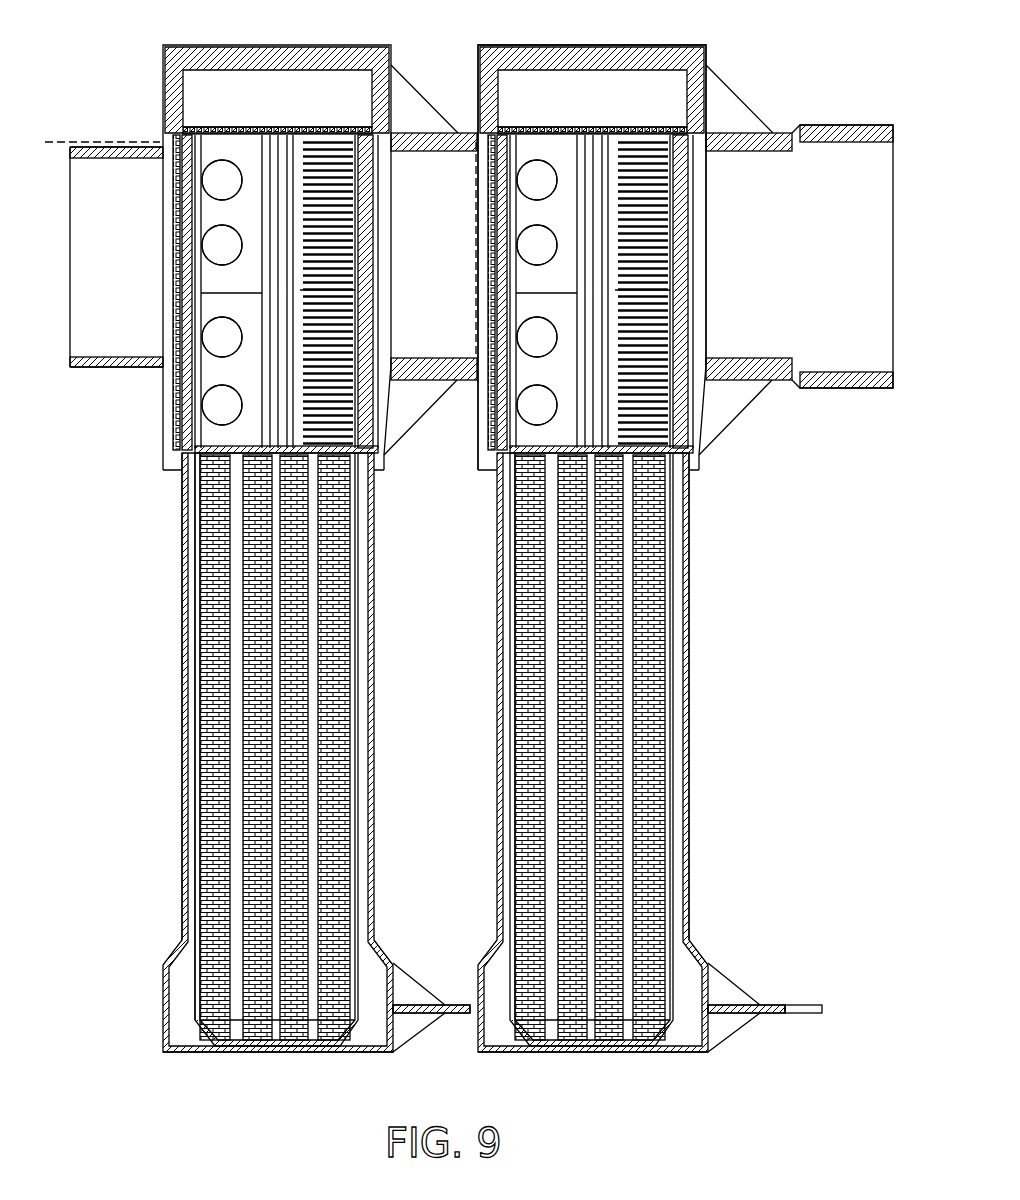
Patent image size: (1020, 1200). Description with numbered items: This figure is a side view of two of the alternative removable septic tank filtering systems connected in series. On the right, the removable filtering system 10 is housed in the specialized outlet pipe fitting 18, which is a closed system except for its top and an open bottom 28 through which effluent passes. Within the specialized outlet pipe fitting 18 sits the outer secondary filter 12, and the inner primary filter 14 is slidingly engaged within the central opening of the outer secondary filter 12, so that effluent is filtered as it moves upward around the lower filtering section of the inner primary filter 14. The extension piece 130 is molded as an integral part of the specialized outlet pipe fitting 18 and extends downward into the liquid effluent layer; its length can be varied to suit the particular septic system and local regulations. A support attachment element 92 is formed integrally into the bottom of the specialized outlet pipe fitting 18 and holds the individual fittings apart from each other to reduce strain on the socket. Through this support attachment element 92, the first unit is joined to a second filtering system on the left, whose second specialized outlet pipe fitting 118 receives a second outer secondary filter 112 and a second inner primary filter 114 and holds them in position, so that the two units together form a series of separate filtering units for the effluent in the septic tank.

The removable filtering system 10 is at (716, 740).
The outer secondary filter 12 is at (566, 375).
The inner primary filter 14 is at (692, 642).
The specialized outlet pipe fitting 18 is at (838, 133).
The open bottom 28 is at (368, 1040).
The support attachment element 92 is at (785, 1006).
The second outer secondary filter 112 is at (218, 372).
The second inner primary filter 114 is at (186, 558).
The second specialized outlet pipe fitting 118 is at (116, 152).
The extension piece 130 is at (182, 690).